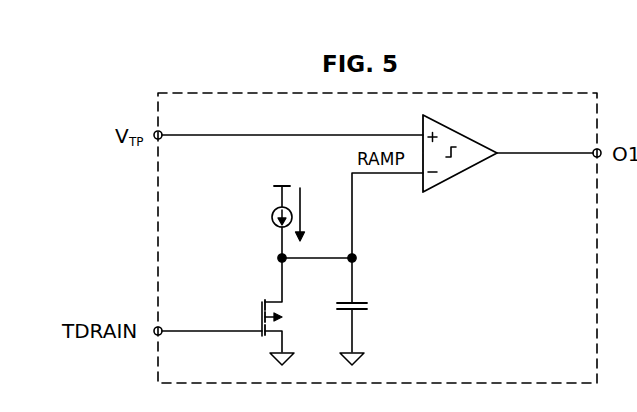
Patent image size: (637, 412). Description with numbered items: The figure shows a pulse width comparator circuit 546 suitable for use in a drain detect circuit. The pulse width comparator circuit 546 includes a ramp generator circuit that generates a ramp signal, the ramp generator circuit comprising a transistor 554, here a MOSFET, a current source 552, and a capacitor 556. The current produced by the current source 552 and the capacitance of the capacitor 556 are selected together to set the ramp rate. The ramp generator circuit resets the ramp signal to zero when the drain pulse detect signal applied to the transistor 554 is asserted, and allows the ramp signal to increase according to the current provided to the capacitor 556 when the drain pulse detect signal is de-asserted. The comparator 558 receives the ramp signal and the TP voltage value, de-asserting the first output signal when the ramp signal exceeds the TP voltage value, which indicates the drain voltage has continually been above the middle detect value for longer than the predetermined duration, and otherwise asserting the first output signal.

The pulse width comparator circuit 546 is at (176, 92).
The current source 552 is at (272, 217).
The transistor 554 is at (261, 312).
The capacitor 556 is at (367, 303).
The comparator 558 is at (460, 175).